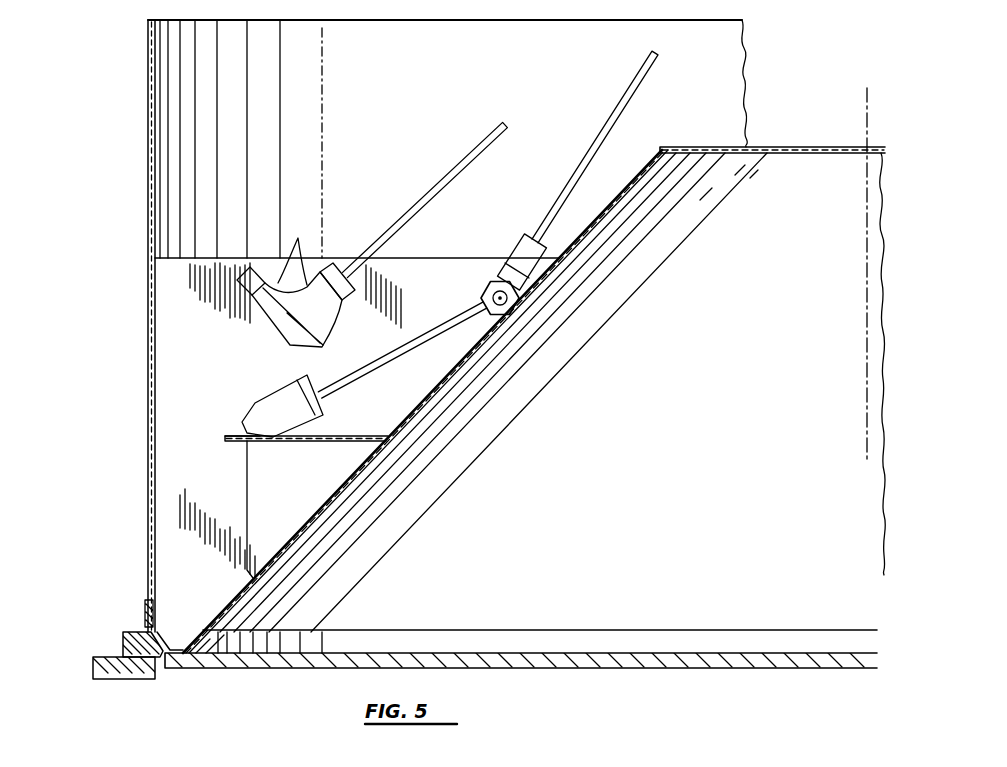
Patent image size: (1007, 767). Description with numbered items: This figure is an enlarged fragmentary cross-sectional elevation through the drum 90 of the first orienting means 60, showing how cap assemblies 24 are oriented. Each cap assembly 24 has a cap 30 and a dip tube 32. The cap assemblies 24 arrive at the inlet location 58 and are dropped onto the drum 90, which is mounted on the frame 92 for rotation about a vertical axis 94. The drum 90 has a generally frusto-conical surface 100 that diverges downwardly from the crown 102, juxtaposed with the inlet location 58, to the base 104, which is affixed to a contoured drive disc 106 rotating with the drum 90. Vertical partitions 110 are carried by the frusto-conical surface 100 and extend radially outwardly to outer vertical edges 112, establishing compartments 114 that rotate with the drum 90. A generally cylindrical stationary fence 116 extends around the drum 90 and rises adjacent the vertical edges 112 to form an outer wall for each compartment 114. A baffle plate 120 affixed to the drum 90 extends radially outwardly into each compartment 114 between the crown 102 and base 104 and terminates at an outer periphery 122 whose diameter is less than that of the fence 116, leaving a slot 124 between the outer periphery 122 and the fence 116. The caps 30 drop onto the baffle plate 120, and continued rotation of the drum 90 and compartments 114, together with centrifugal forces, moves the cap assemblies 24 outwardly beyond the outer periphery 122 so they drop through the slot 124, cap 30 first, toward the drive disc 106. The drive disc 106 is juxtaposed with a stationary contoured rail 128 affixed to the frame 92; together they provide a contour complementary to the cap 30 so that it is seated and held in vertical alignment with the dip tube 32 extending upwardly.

The cap assembly 24 is at (338, 250).
The cap 30 is at (493, 289).
The dip tube 32 is at (469, 160).
The inlet location 58 is at (688, 32).
The first orienting means 60 is at (187, 326).
The drum 90 is at (606, 232).
The frame 92 is at (94, 673).
The vertical axis 94 is at (866, 96).
The frusto-conical surface 100 is at (641, 172).
The crown 102 is at (755, 147).
The base 104 is at (364, 642).
The contoured drive disc 106 is at (211, 632).
The vertical partition 110 is at (191, 258).
The outer vertical edge 112 is at (148, 338).
The compartment 114 is at (406, 260).
The stationary fence 116 is at (148, 134).
The baffle plate 120 is at (302, 442).
The outer periphery 122 is at (227, 440).
The slot 124 is at (148, 454).
The contoured rail 128 is at (124, 641).